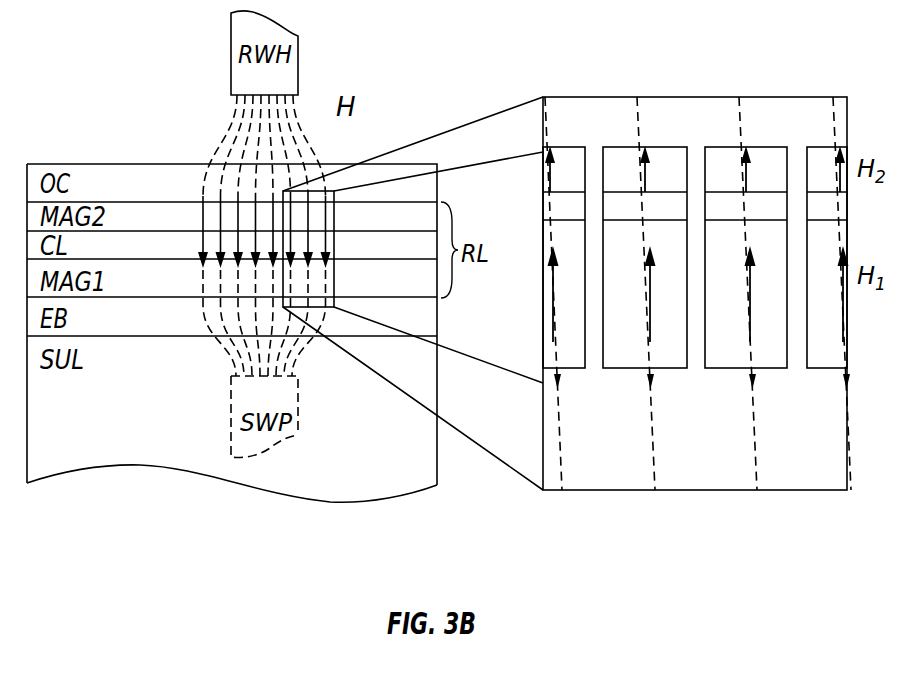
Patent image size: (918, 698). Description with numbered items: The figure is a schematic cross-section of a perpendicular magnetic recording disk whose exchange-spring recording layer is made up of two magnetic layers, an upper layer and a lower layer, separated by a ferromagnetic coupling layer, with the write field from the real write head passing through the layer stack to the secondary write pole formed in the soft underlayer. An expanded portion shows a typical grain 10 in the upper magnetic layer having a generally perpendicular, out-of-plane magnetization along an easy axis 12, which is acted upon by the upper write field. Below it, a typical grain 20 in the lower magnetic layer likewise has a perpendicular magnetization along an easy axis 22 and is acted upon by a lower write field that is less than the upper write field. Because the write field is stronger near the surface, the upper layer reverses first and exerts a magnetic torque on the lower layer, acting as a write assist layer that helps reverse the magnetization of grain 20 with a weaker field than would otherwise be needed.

The grain 10 is at (761, 152).
The easy axis 12 is at (742, 178).
The grain 20 is at (760, 357).
The easy axis 22 is at (745, 328).